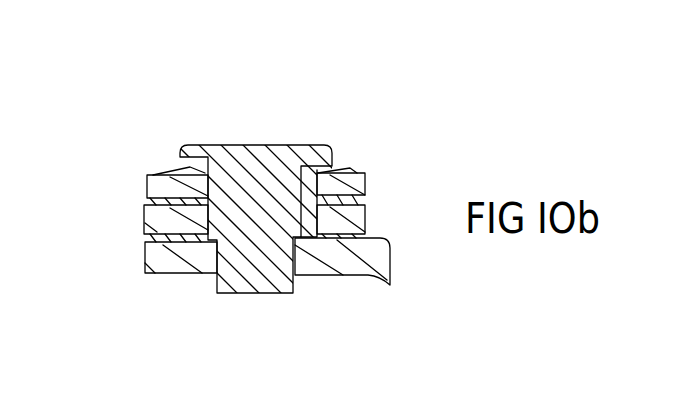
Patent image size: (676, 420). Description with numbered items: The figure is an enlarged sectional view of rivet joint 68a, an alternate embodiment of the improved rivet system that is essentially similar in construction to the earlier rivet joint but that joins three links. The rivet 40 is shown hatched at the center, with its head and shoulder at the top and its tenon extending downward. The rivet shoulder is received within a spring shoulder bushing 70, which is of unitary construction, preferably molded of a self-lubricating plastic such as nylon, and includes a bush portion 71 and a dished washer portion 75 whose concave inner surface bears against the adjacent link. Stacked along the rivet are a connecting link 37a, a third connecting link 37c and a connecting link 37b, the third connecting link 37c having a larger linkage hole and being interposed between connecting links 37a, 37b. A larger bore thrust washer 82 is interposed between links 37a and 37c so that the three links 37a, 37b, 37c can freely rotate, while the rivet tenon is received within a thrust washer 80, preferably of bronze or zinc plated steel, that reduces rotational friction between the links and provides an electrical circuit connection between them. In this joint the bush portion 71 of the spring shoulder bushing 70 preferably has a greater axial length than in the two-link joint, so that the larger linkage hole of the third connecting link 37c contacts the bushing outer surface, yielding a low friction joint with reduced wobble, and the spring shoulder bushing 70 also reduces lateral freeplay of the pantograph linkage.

The rivet joint 68a is at (278, 75).
The rivet 40 is at (307, 108).
The bush portion 71 is at (303, 185).
The connecting link 37a is at (143, 190).
The third connecting link 37c is at (143, 225).
The connecting link 37b is at (143, 257).
The washer portion 75 is at (332, 163).
The spring shoulder bushing 70 is at (375, 150).
The larger bore thrust washer 82 is at (365, 198).
The thrust washer 80 is at (363, 237).